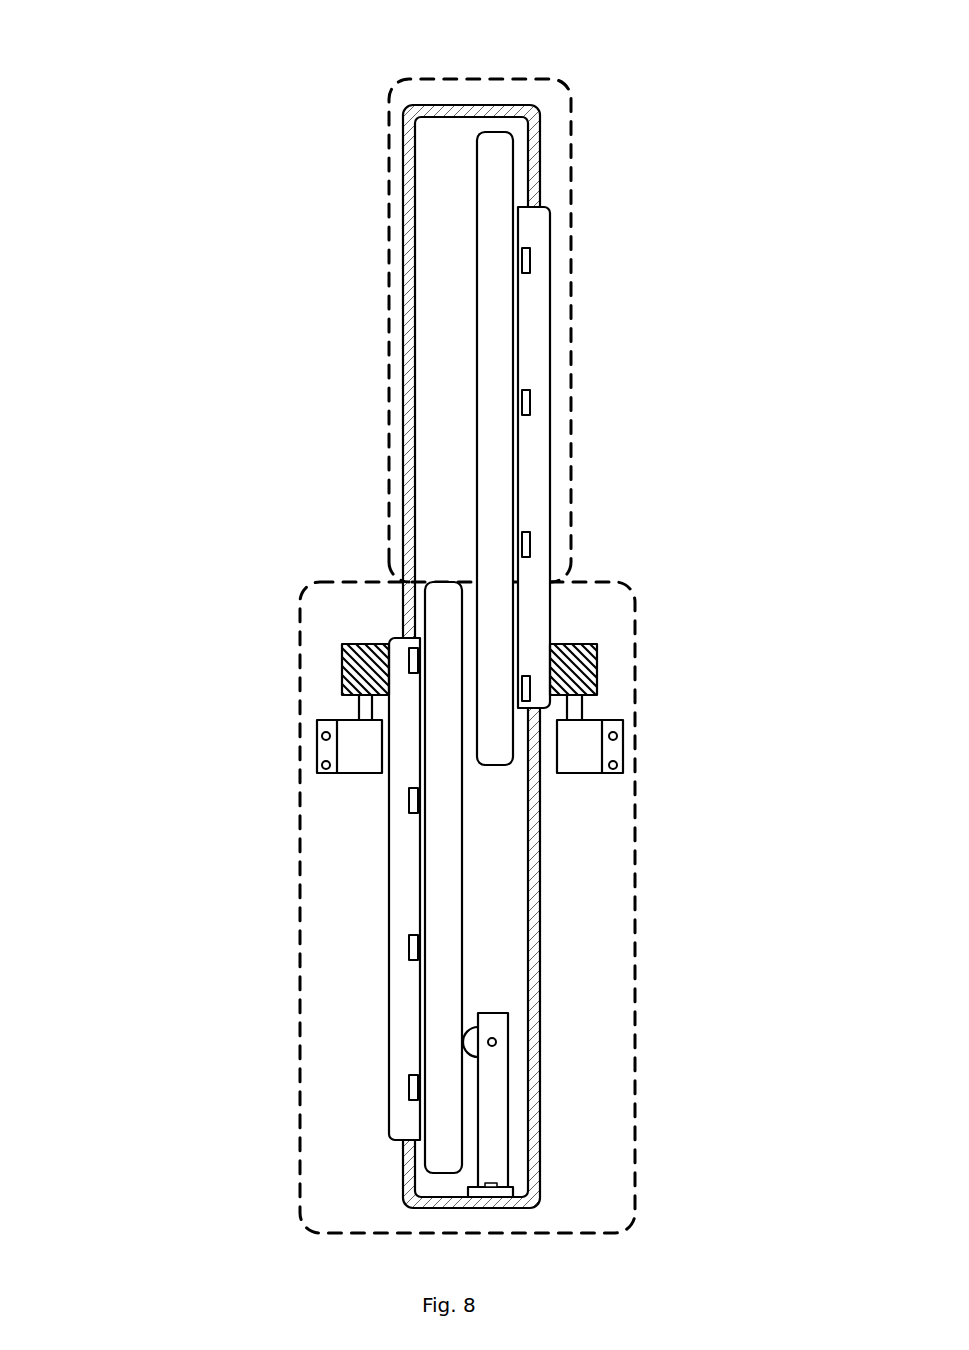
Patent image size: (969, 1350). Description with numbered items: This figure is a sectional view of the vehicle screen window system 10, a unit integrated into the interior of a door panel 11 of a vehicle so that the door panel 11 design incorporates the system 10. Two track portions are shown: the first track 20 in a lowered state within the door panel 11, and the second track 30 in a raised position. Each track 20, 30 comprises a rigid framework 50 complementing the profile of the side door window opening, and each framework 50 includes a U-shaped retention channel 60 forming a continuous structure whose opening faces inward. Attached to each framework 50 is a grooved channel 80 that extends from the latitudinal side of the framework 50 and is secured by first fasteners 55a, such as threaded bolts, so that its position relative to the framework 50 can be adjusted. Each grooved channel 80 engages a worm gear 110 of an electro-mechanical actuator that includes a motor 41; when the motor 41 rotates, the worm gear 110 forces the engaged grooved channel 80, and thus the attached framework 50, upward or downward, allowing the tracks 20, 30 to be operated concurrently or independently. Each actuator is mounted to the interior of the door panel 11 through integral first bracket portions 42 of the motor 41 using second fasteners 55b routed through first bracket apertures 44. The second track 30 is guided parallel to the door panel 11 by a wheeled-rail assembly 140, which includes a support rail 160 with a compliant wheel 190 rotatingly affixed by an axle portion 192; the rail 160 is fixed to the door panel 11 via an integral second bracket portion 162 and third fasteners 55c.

The vehicle screen window system 10 is at (120, 128).
The door panel 11 is at (637, 891).
The first track 20 is at (500, 175).
The second track 30 is at (430, 900).
The motor 41 is at (352, 730).
The first bracket portion 42 is at (317, 745).
The first bracket aperture 44 is at (460, 756).
The framework 50 is at (412, 185).
The first fasteners 55a is at (531, 398).
The second fasteners 55b is at (318, 733).
The third fasteners 55c is at (492, 1183).
The U-shaped retention channel 60 is at (500, 105).
The grooved channel 80 is at (540, 451).
The worm gear 110 is at (343, 660).
The wheeled-rail assembly 140 is at (512, 1100).
The support rail 160 is at (508, 1015).
The second bracket portion 162 is at (500, 1196).
The compliant wheel 190 is at (472, 1044).
The axle portion 192 is at (497, 1042).